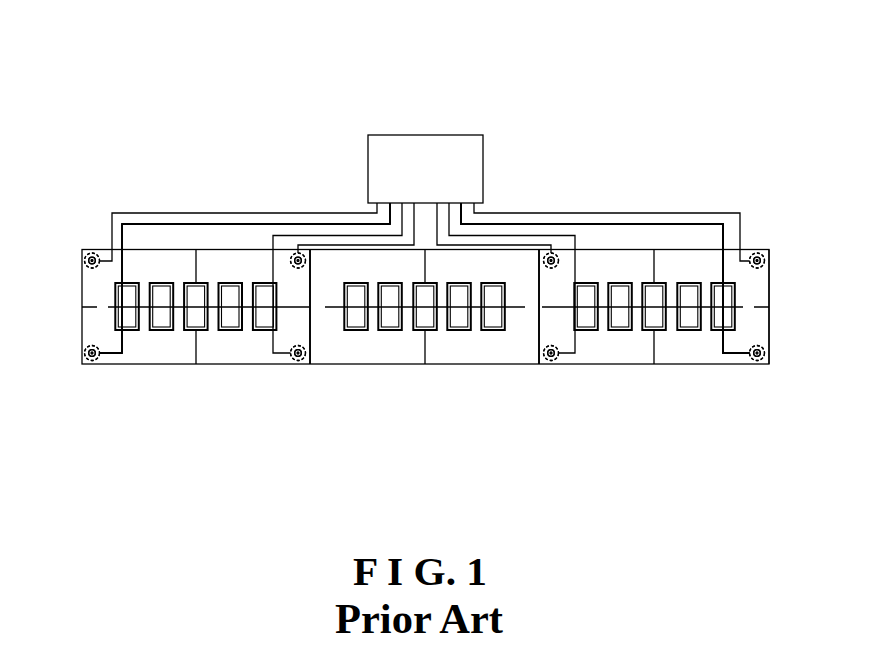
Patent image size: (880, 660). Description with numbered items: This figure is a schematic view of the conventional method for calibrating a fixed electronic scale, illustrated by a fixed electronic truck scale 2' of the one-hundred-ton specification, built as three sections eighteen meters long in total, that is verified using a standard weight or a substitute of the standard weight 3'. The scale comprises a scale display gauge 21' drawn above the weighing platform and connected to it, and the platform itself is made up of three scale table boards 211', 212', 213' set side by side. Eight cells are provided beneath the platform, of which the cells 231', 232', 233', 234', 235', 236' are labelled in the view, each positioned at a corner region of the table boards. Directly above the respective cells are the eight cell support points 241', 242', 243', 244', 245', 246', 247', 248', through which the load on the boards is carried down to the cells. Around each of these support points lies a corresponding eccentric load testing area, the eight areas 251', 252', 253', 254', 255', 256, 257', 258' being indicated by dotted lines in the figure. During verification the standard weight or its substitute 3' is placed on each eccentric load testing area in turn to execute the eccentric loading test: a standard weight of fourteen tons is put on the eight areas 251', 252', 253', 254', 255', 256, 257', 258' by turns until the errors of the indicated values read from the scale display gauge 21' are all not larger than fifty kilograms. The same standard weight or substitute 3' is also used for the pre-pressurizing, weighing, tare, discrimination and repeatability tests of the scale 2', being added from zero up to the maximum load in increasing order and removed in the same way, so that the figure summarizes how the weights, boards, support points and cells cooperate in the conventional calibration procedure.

The fixed electronic truck scale 2' is at (425, 195).
The scale display gauge 21' is at (463, 164).
The standard weight or substitute 3' is at (425, 372).
The scale table board 211' is at (228, 311).
The scale table board 212' is at (424, 332).
The scale table board 213' is at (615, 316).
The cell 231' is at (58, 342).
The cell 232' is at (56, 238).
The cell 233' is at (277, 218).
The cell 234' is at (549, 217).
The cell 235' is at (790, 223).
The cell 236' is at (805, 335).
The cell support point 241' is at (204, 299).
The cell support point 242' is at (191, 250).
The cell support point 243' is at (298, 209).
The cell support point 244' is at (544, 203).
The cell support point 245' is at (663, 235).
The cell support point 246' is at (660, 288).
The cell support point 247' is at (512, 325).
The cell support point 248' is at (322, 313).
The eccentric load testing area 251' is at (245, 330).
The eccentric load testing area 252' is at (245, 264).
The eccentric load testing area 253' is at (423, 255).
The eccentric load testing area 254' is at (605, 261).
The eccentric load testing area 255' is at (657, 283).
The eccentric load testing area 256 is at (717, 353).
The eccentric load testing area 257' is at (605, 321).
The eccentric load testing area 258' is at (424, 335).